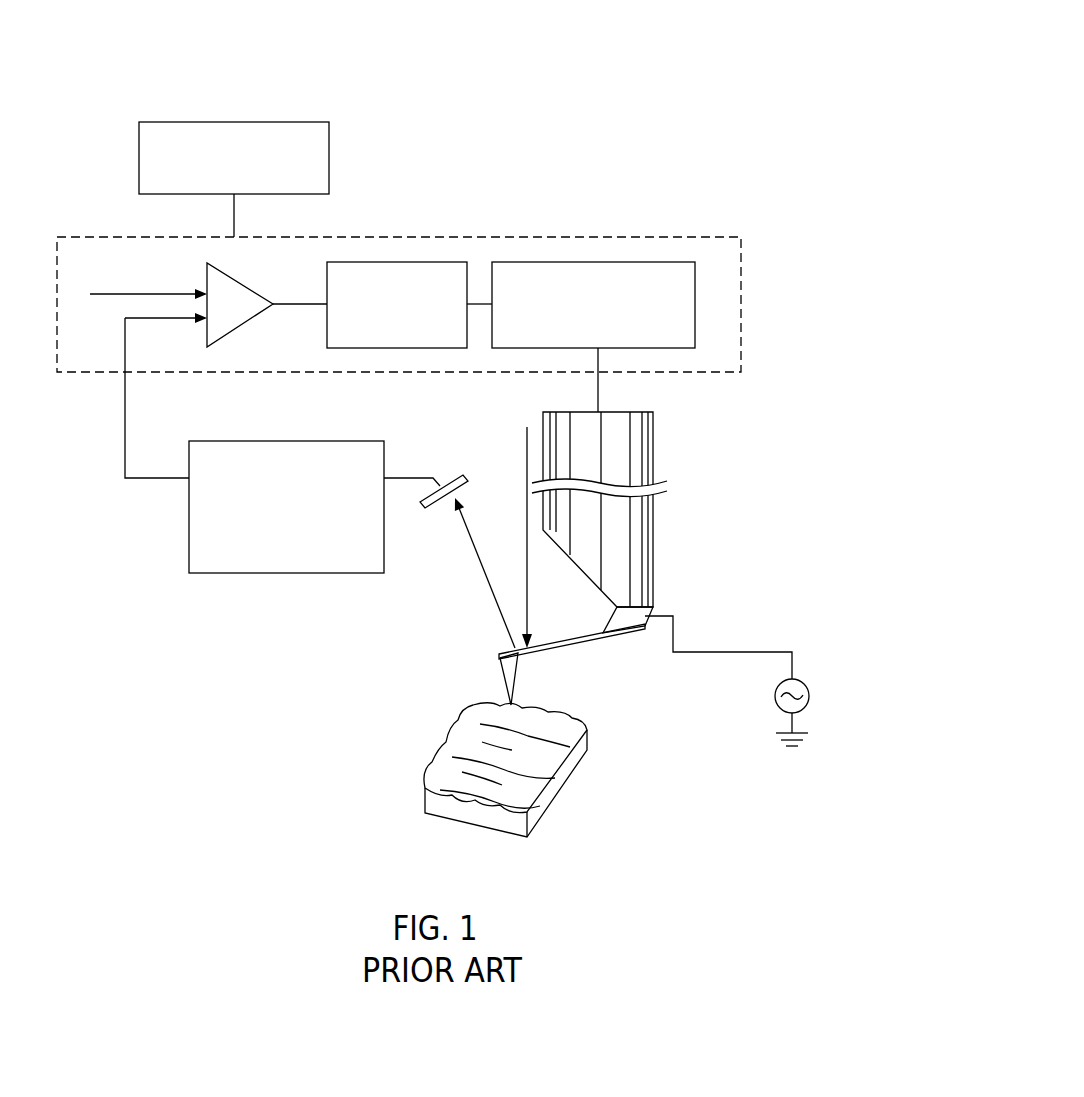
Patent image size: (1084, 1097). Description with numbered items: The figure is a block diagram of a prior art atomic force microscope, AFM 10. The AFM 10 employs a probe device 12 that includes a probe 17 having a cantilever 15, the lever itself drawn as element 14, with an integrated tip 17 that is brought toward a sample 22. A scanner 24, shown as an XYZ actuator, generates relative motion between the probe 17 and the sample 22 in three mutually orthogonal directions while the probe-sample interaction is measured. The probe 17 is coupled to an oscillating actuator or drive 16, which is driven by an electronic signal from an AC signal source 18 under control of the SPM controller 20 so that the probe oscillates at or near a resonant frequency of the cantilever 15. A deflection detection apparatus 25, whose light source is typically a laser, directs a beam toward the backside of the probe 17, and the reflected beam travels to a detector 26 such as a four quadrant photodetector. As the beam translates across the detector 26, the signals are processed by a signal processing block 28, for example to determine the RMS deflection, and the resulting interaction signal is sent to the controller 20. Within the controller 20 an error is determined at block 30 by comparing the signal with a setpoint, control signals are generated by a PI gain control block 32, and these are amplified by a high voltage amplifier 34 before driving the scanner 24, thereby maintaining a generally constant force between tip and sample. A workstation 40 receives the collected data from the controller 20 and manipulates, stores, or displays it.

The AFM 10 is at (670, 57).
The workstation 40 is at (283, 122).
The SPM controller 20 is at (591, 237).
The error block 30 is at (240, 325).
The PI gain control block 32 is at (397, 262).
The high voltage amplifier 34 is at (530, 262).
The signal processing block 28 is at (210, 440).
The deflection detection apparatus 25 is at (428, 448).
The detector 26 is at (433, 508).
The scanner 24 is at (682, 415).
The probe device 12 is at (618, 690).
The oscillating actuator or drive 16 is at (640, 616).
The cantilever 15 is at (592, 628).
The cantilever 14 is at (580, 646).
The probe 17 is at (502, 677).
The AC signal source 18 is at (797, 678).
The sample 22 is at (442, 752).